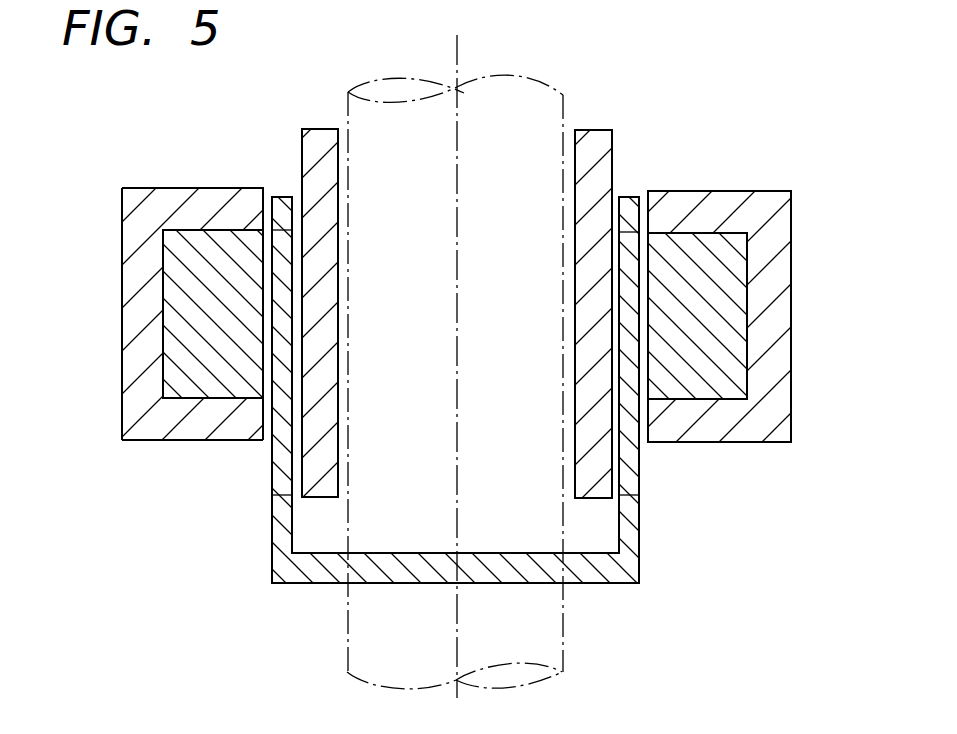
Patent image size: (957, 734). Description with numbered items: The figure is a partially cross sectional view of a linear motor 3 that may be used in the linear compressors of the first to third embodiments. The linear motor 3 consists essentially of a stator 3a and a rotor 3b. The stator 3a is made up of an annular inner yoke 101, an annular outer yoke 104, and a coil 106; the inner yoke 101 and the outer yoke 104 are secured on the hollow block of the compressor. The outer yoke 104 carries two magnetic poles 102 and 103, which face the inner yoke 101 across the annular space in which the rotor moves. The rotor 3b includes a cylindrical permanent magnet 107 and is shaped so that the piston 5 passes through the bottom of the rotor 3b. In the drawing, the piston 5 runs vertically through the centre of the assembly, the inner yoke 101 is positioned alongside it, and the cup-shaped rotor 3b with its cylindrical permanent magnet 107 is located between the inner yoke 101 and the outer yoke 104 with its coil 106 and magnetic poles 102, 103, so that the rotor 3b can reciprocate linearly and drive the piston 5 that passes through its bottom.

The linear motor 3 is at (598, 109).
The stator 3a is at (155, 323).
The rotor 3b is at (468, 396).
The piston 5 is at (562, 632).
The annular inner yoke 101 is at (318, 138).
The magnetic pole 102 is at (198, 203).
The magnetic pole 103 is at (248, 435).
The annular outer yoke 104 is at (145, 422).
The coil 106 is at (713, 245).
The cylindrical permanent magnet 107 is at (274, 482).